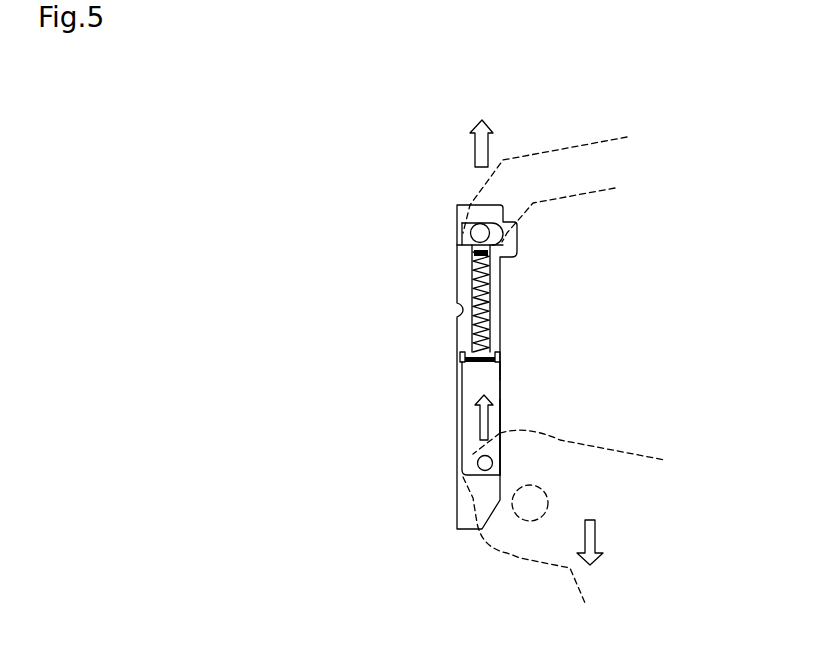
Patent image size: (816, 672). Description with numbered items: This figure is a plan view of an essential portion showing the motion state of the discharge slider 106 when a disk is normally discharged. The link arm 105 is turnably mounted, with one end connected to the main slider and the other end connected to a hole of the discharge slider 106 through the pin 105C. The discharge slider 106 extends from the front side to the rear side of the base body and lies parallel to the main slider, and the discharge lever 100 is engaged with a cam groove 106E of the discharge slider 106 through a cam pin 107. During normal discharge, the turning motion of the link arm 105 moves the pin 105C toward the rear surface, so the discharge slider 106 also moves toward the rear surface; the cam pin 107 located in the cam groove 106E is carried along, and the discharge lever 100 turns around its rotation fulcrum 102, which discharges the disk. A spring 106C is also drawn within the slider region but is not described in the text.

The discharge lever 100 is at (540, 547).
The rotation fulcrum 102 is at (528, 505).
The link arm 105 is at (575, 165).
The pin 105C is at (470, 233).
The discharge slider 106 is at (458, 393).
The coil spring 106C is at (473, 328).
The cam groove 106E is at (498, 390).
The cam pin 107 is at (477, 463).